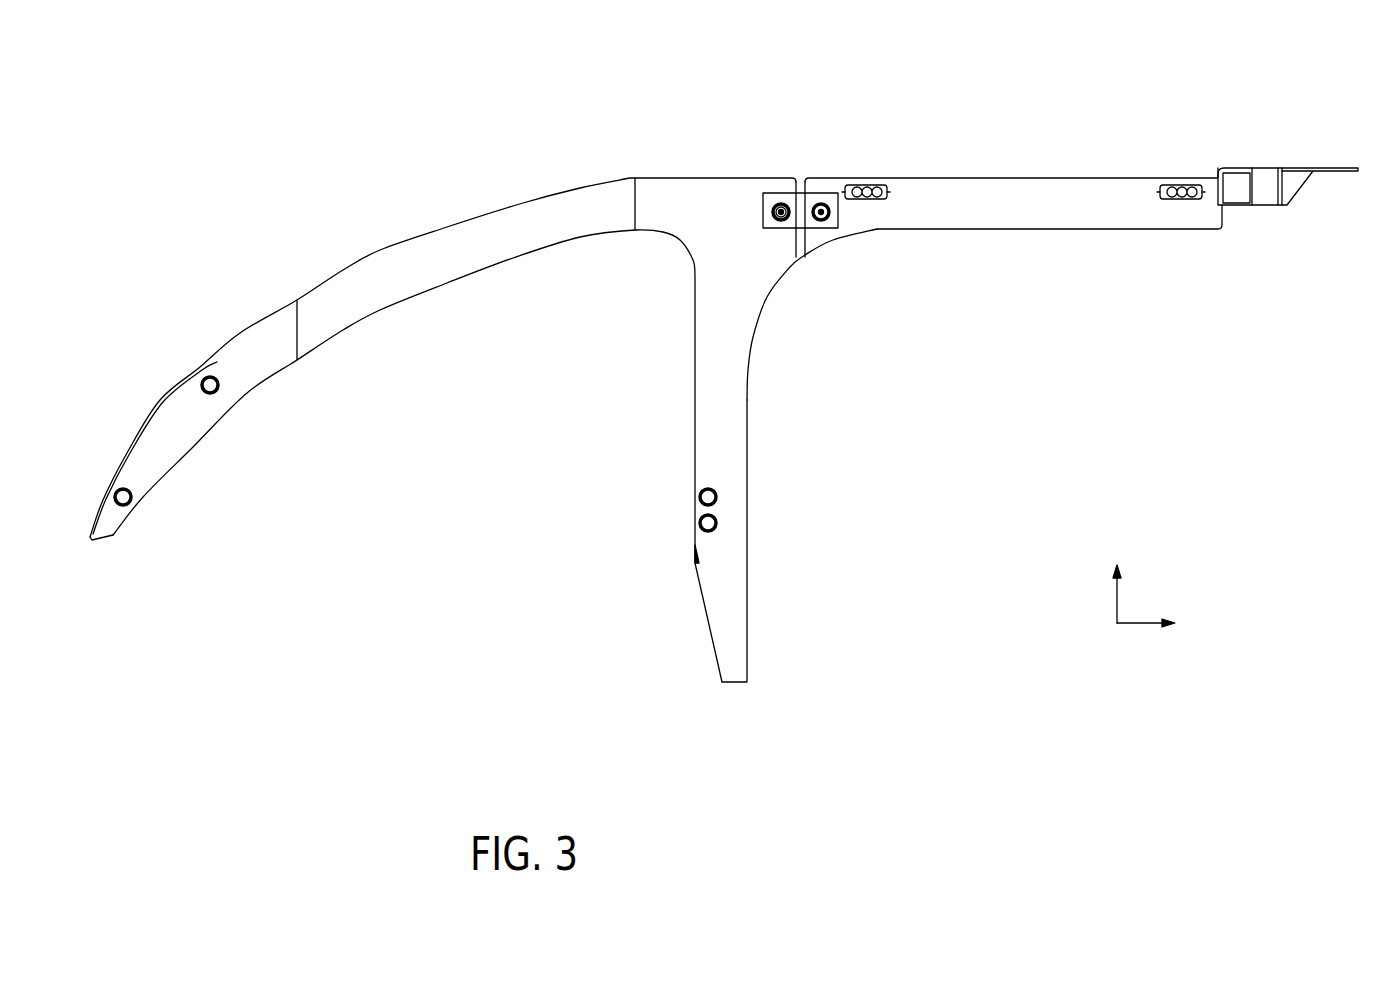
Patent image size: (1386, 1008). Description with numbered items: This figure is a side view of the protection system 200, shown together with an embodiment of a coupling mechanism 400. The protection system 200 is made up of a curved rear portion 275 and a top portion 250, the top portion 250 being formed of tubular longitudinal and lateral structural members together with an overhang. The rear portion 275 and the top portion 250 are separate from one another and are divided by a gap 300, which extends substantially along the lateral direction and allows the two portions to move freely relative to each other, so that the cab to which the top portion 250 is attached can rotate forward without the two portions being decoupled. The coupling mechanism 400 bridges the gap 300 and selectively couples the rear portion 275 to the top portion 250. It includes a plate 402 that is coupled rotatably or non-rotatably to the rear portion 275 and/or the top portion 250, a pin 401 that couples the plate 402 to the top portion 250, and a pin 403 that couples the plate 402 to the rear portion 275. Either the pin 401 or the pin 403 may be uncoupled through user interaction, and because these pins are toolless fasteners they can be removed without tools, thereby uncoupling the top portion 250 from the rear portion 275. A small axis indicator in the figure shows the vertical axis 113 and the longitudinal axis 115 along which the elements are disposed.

The protection system 200 is at (488, 104).
The rear portion 275 is at (425, 167).
The top portion 250 is at (1010, 166).
The gap 300 is at (805, 176).
The coupling mechanism 400 is at (797, 207).
The pin 401 is at (821, 215).
The plate 402 is at (768, 193).
The pin 403 is at (781, 215).
The vertical axis 113 is at (1116, 598).
The longitudinal axis 115 is at (1138, 624).